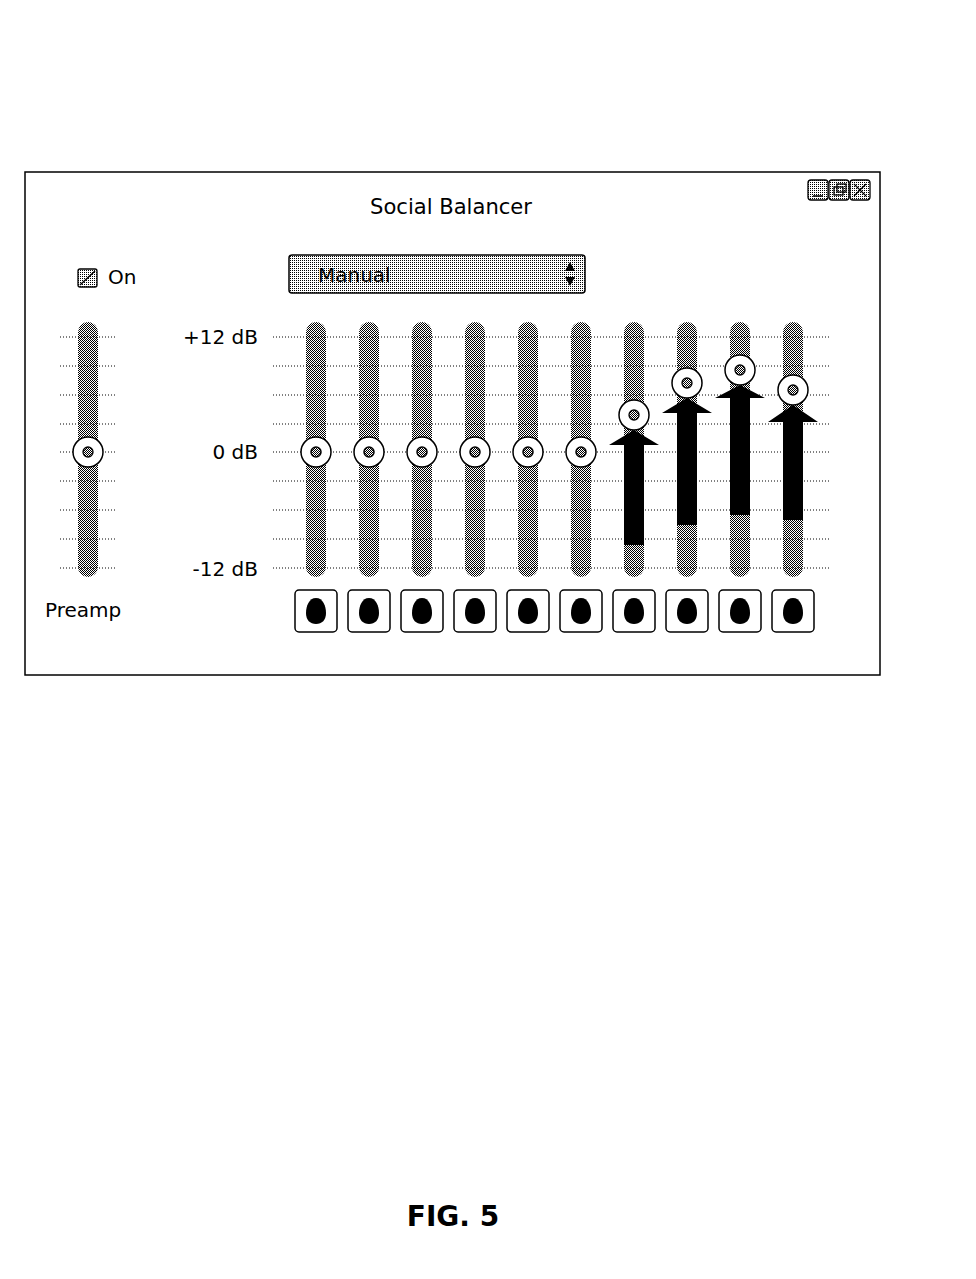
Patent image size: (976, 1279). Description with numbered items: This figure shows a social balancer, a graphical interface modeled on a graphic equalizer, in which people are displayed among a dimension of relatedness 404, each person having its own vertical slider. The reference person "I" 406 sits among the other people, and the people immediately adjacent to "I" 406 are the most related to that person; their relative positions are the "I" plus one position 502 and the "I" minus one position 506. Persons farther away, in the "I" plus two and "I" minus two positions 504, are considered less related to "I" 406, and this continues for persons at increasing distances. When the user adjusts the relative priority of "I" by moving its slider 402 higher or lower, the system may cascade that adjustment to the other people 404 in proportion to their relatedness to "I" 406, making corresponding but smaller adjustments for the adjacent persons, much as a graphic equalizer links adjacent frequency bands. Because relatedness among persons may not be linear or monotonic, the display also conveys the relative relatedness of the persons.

The slider 402 is at (753, 367).
The people displayed among a dimension of relatedness 404 is at (554, 734).
The I 406 is at (738, 714).
The I+1 position 502 is at (804, 404).
The I+2 and I-2 positions 504 is at (635, 428).
The I-1 position 506 is at (690, 380).